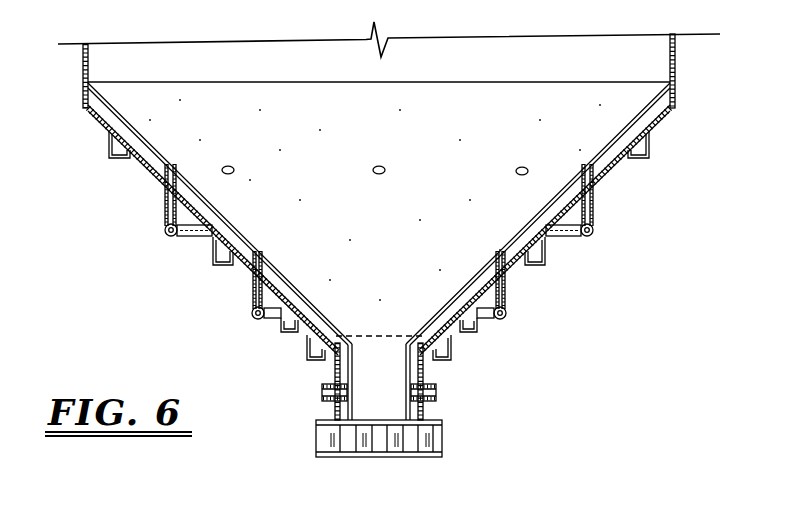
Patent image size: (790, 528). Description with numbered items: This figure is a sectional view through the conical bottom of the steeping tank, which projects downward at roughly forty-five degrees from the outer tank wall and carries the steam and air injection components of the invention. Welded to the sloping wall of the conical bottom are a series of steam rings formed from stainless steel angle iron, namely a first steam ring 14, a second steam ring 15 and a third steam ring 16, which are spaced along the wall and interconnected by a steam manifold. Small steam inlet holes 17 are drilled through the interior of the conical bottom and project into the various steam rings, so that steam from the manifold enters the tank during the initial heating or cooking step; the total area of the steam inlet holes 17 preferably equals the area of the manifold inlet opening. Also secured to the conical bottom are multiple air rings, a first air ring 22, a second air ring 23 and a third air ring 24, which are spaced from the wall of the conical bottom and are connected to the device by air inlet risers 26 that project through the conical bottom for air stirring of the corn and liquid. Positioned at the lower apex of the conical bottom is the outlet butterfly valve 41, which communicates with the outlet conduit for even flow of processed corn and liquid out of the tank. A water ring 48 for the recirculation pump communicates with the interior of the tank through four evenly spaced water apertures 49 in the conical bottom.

The first steam ring 14 is at (454, 355).
The second steam ring 15 is at (548, 260).
The third steam ring 16 is at (649, 145).
The steam inlet holes 17 is at (119, 143).
The first air ring 22 is at (436, 395).
The second air ring 23 is at (252, 313).
The third air ring 24 is at (165, 232).
The air inlet risers 26 is at (165, 200).
The outlet butterfly valve 41 is at (316, 436).
The water ring 48 is at (282, 327).
The water apertures 49 is at (290, 313).